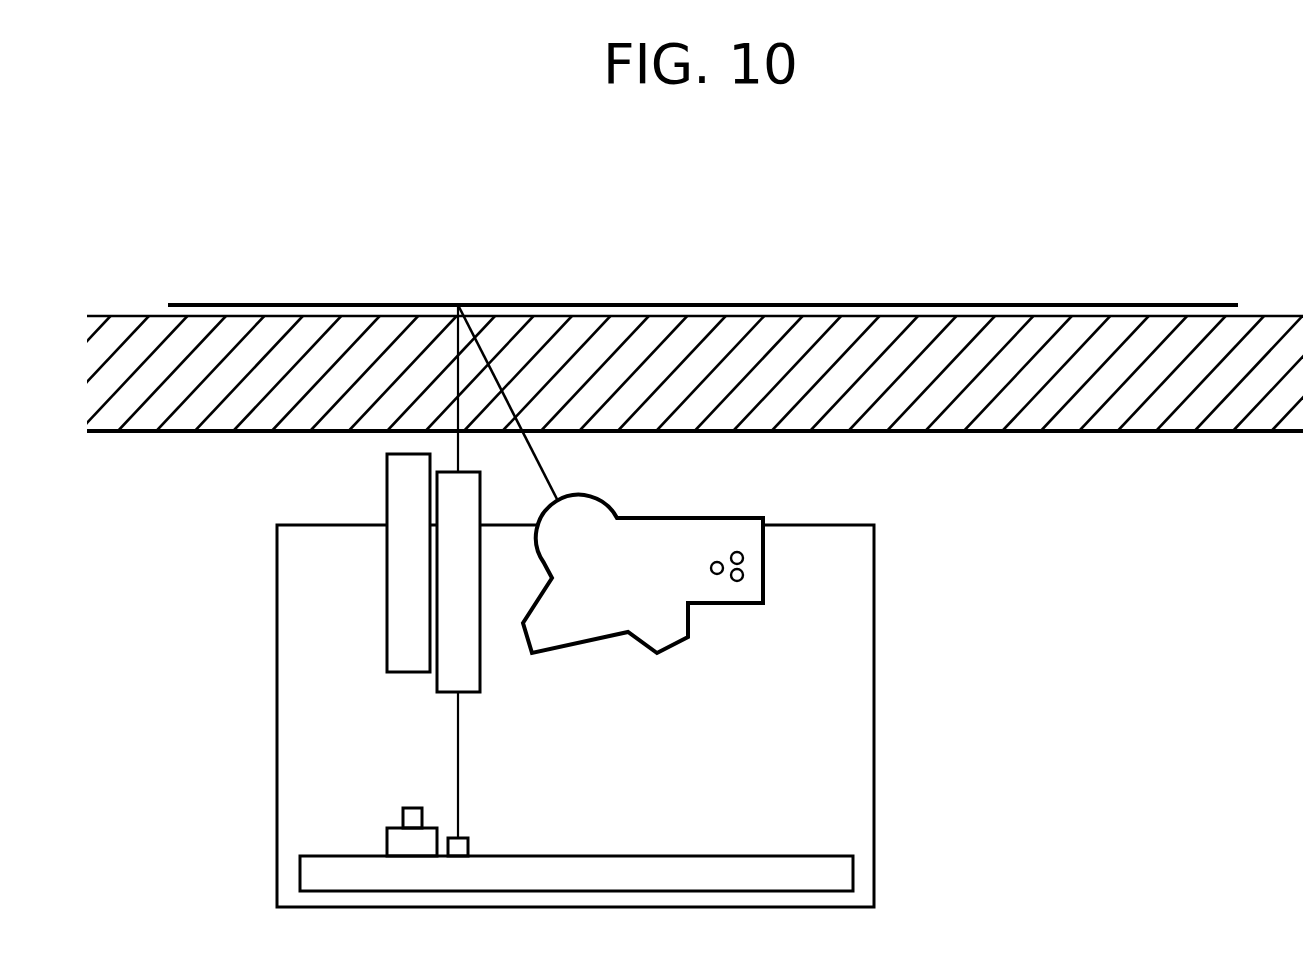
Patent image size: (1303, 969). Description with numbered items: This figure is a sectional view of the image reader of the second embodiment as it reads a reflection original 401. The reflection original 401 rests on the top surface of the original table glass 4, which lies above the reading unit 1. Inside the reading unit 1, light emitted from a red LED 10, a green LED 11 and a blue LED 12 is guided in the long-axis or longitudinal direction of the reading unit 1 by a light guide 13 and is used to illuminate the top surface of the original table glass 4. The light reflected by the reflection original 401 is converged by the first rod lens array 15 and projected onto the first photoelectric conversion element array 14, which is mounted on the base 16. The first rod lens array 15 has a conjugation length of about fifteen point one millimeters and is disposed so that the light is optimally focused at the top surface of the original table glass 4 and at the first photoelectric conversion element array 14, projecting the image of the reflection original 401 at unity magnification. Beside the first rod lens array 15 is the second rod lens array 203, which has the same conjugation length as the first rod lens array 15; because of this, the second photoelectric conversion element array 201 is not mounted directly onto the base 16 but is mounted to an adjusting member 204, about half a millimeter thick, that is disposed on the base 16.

The reading unit 1 is at (277, 712).
The original table glass 4 is at (133, 328).
The reflection original 401 is at (775, 303).
The red LED 10 is at (737, 552).
The green LED 11 is at (743, 575).
The blue LED 12 is at (713, 562).
The light guide 13 is at (678, 645).
The first photoelectric conversion element array 14 is at (467, 838).
The first rod lens array 15 is at (450, 692).
The base 16 is at (778, 855).
The second photoelectric conversion element array 201 is at (403, 820).
The second rod lens array 203 is at (387, 578).
The adjusting member 204 is at (387, 843).